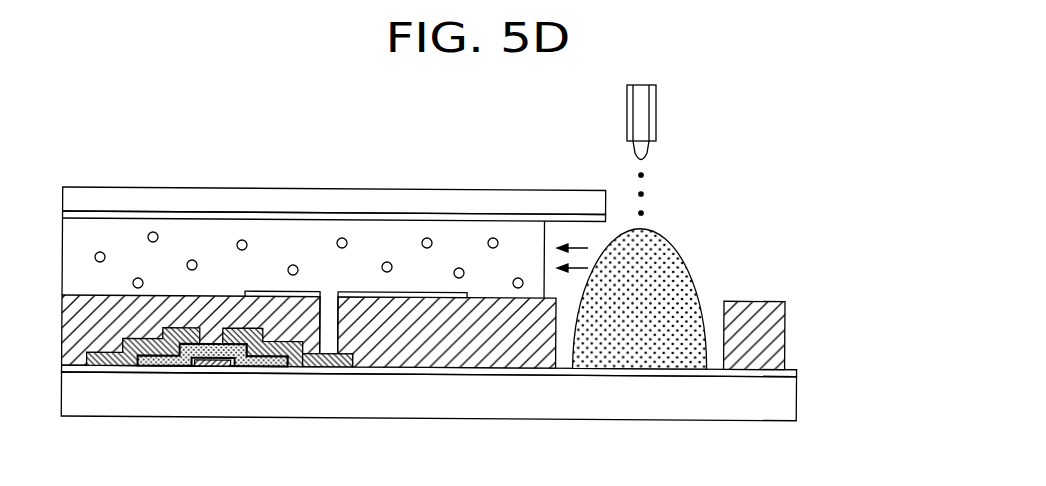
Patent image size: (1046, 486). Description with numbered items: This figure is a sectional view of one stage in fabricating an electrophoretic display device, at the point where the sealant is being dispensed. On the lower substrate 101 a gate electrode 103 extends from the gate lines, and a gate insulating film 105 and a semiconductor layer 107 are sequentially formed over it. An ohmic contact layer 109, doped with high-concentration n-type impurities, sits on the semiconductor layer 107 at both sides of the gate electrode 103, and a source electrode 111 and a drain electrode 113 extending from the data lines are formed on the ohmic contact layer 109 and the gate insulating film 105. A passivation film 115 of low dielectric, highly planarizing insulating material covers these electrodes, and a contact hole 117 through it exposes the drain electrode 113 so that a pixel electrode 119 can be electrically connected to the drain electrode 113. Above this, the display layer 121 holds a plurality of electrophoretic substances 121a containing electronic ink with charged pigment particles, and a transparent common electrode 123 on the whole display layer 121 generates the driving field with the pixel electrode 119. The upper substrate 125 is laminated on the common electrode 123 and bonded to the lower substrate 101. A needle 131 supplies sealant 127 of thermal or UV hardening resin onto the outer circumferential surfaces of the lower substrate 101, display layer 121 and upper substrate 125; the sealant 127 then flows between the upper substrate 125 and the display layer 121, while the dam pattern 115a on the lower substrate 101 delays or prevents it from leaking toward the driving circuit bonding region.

The lower substrate 101 is at (787, 407).
The gate electrode 103 is at (212, 371).
The gate insulating film 105 is at (787, 372).
The semiconductor layer 107 is at (246, 366).
The ohmic contact layer 109 is at (279, 367).
The source electrode 111 is at (110, 366).
The drain electrode 113 is at (325, 366).
The passivation film 115 is at (441, 357).
The dam pattern 115a is at (778, 328).
The contact hole 117 is at (332, 323).
The pixel electrode 119 is at (277, 291).
The display layer 121 is at (203, 228).
The electrophoretic substances 121a is at (153, 232).
The common electrode 123 is at (463, 218).
The upper substrate 125 is at (508, 200).
The sealant 127 is at (678, 272).
The needle 131 is at (648, 117).